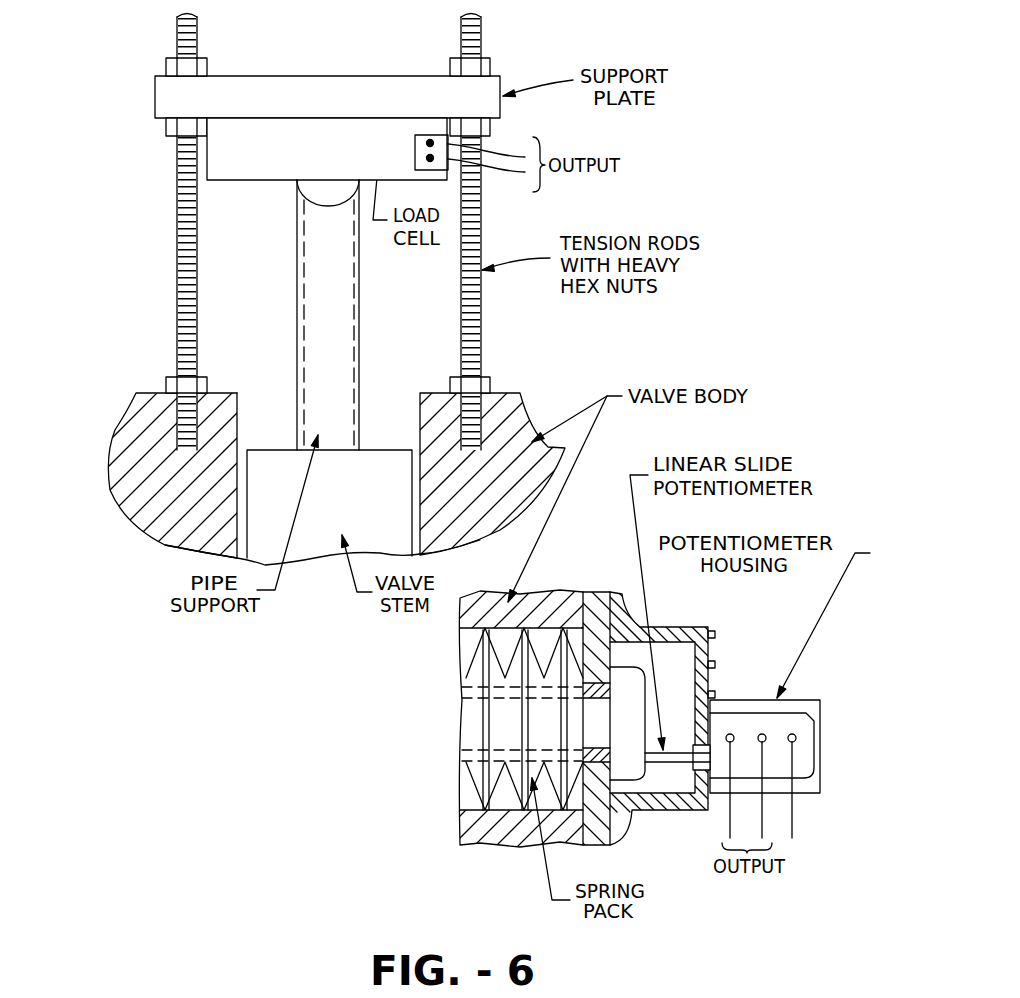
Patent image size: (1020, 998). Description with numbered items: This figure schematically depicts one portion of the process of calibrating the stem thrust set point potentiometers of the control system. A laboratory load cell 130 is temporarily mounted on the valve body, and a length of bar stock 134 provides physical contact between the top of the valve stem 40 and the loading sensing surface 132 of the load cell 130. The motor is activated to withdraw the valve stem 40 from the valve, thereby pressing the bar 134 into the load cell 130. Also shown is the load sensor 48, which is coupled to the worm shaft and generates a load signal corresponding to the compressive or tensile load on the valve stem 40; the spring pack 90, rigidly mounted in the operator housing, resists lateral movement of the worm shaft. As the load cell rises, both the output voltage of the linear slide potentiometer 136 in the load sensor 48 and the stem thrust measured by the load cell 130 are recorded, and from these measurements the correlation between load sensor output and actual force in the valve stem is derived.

The laboratory load cell 130 is at (282, 155).
The loading sensing surface 132 is at (284, 183).
The bar stock 134 is at (335, 290).
The valve stem 40 is at (387, 497).
The load sensor 48 is at (712, 614).
The linear slide potentiometer 136 is at (672, 764).
The spring pack 90 is at (516, 788).